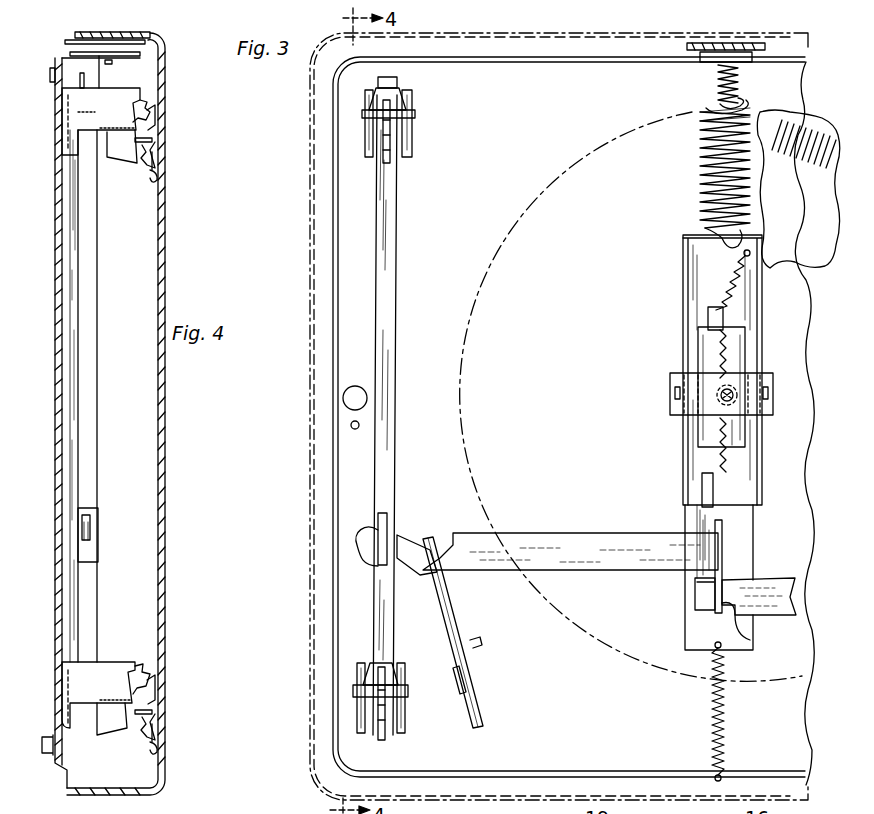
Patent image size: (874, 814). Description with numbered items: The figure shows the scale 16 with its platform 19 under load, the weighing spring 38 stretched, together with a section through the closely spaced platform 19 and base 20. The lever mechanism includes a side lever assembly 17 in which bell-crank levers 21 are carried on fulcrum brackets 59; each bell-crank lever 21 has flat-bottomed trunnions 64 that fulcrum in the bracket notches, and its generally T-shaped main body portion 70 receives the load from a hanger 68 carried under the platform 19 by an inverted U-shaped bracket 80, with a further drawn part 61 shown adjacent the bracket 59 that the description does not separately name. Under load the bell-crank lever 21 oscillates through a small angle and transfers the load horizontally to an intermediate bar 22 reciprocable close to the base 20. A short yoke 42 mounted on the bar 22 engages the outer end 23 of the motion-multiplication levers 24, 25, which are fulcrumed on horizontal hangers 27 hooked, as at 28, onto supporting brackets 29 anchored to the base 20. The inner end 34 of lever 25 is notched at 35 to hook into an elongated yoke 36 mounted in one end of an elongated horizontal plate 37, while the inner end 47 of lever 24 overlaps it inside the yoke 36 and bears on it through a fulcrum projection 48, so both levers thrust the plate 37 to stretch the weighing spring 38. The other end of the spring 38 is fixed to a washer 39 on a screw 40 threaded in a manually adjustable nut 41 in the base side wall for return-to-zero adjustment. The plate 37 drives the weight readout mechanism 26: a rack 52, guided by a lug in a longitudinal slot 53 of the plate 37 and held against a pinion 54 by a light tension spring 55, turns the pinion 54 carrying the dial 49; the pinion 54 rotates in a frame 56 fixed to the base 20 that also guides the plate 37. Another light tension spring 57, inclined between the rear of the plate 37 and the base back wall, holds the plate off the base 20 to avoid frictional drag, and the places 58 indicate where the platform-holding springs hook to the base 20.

In FIG. 4, the scale 16 is at (165, 473).
In FIG. 3, the scale 16 is at (335, 468).
In FIG. 4, the side lever assembly 17 is at (78, 400).
In FIG. 3, the side lever assembly 17 is at (396, 268).
In FIG. 4, the platform 19 is at (164, 425).
In FIG. 3, the platform 19 is at (312, 355).
In FIG. 4, the base 20 is at (58, 300).
In FIG. 3, the base 20 is at (336, 395).
In FIG. 4, the bell-crank lever 21 is at (115, 160).
In FIG. 3, the bell-crank lever 21 is at (416, 114).
In FIG. 4, the intermediate bar 22 is at (90, 460).
In FIG. 3, the intermediate bar 22 is at (395, 465).
In FIG. 4, the outer end of motion-multiplication lever 23 is at (98, 546).
In FIG. 3, the outer end of motion-multiplication lever 23 is at (362, 548).
In FIG. 3, the motion-multiplication lever 24 is at (540, 533).
In FIG. 3, the motion-multiplication lever 25 is at (765, 583).
In FIG. 3, the weight readout mechanism 26 is at (685, 449).
In FIG. 3, the hanger 27 is at (424, 573).
In FIG. 3, the hook 28 is at (455, 701).
In FIG. 3, the supporting bracket 29 is at (479, 692).
In FIG. 3, the inner end of lever 34 is at (700, 598).
In FIG. 3, the notch 35 is at (752, 638).
In FIG. 3, the elongated yoke 36 is at (720, 560).
In FIG. 3, the elongated horizontal plate 37 is at (692, 632).
In FIG. 3, the weighing spring 38 is at (702, 206).
In FIG. 3, the washer 39 is at (742, 106).
In FIG. 3, the screw 40 is at (718, 90).
In FIG. 4, the adjustable nut 41 is at (150, 33).
In FIG. 3, the adjustable nut 41 is at (710, 45).
In FIG. 4, the yoke 42 is at (99, 522).
In FIG. 3, the yoke 42 is at (390, 520).
In FIG. 3, the inner end of lever 47 is at (700, 542).
In FIG. 3, the fulcrum projection 48 is at (700, 583).
In FIG. 3, the dial 49 is at (805, 112).
In FIG. 3, the rack 52 is at (710, 360).
In FIG. 3, the longitudinal slot 53 is at (714, 490).
In FIG. 3, the pinion 54 is at (733, 388).
In FIG. 3, the light tension spring 55 is at (742, 282).
In FIG. 3, the frame 56 is at (672, 405).
In FIG. 3, the light tension spring 57 is at (724, 722).
In FIG. 3, the spring hooking place 58 is at (358, 420).
In FIG. 4, the fulcrum bracket 59 is at (110, 103).
In FIG. 3, the fulcrum bracket 59 is at (413, 141).
In FIG. 4, the pawl 61 is at (146, 96).
In FIG. 3, the pawl 61 is at (408, 102).
In FIG. 4, the trunnion 64 is at (137, 112).
In FIG. 4, the hanger 68 is at (152, 149).
In FIG. 3, the hanger 68 is at (385, 160).
In FIG. 4, the T-shaped main body portion 70 is at (152, 110).
In FIG. 4, the inverted U-shaped bracket 80 is at (158, 178).